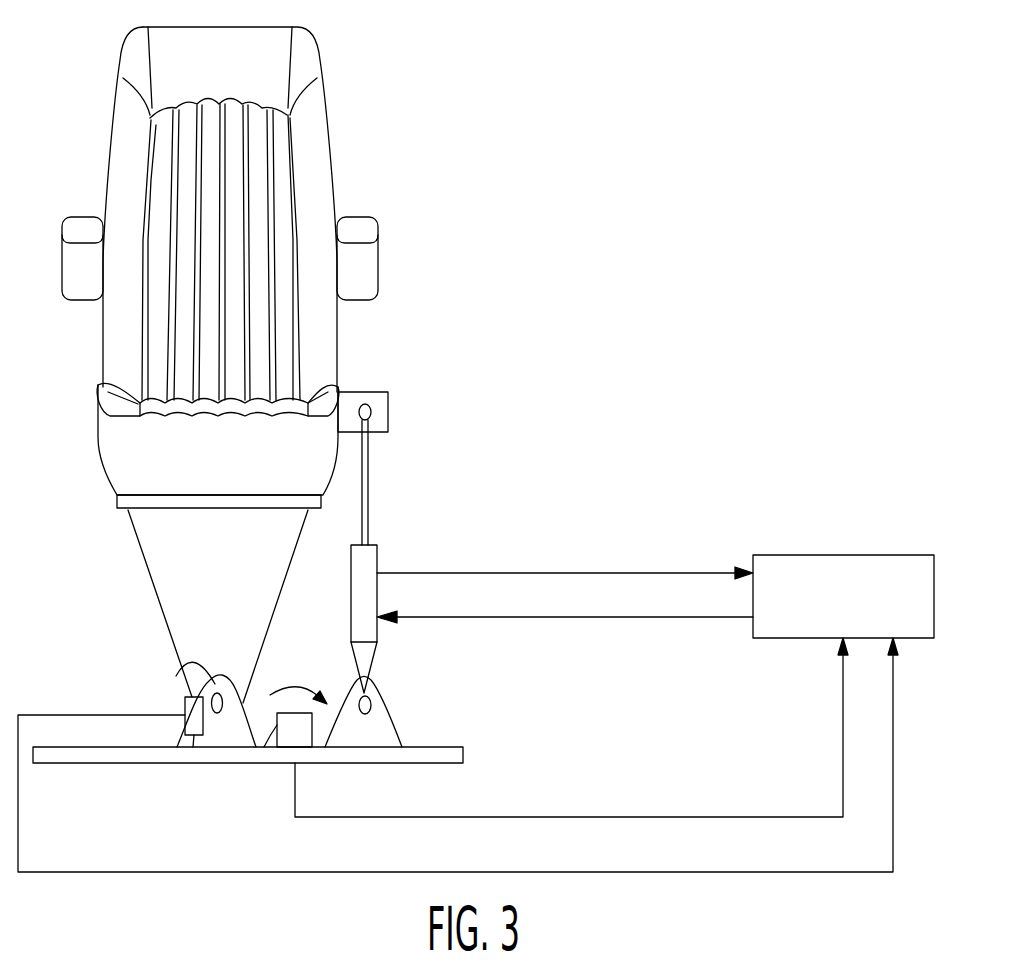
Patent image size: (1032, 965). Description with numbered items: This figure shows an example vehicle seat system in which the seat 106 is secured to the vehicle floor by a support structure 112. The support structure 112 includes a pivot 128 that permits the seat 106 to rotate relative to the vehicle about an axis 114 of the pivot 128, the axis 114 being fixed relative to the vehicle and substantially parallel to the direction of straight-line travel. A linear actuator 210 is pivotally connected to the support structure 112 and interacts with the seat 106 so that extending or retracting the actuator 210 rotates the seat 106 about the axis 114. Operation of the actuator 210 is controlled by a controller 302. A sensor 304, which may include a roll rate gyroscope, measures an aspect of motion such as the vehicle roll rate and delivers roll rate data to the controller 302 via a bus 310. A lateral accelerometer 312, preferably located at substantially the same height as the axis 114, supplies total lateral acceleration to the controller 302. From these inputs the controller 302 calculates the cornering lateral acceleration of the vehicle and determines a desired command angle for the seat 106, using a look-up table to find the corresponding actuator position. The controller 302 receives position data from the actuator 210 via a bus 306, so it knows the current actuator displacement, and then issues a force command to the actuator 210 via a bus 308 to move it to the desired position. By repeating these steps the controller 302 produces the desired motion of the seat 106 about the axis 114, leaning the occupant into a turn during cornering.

The seat 106 is at (103, 332).
The support structure 112 is at (170, 577).
The axis 114 is at (176, 676).
The pivot 128 is at (225, 727).
The linear actuator 210 is at (376, 540).
The controller 302 is at (822, 555).
The sensor 304 is at (277, 735).
The bus 306 is at (547, 573).
The bus 308 is at (547, 617).
The bus 310 is at (570, 817).
The lateral accelerometer 312 is at (193, 763).